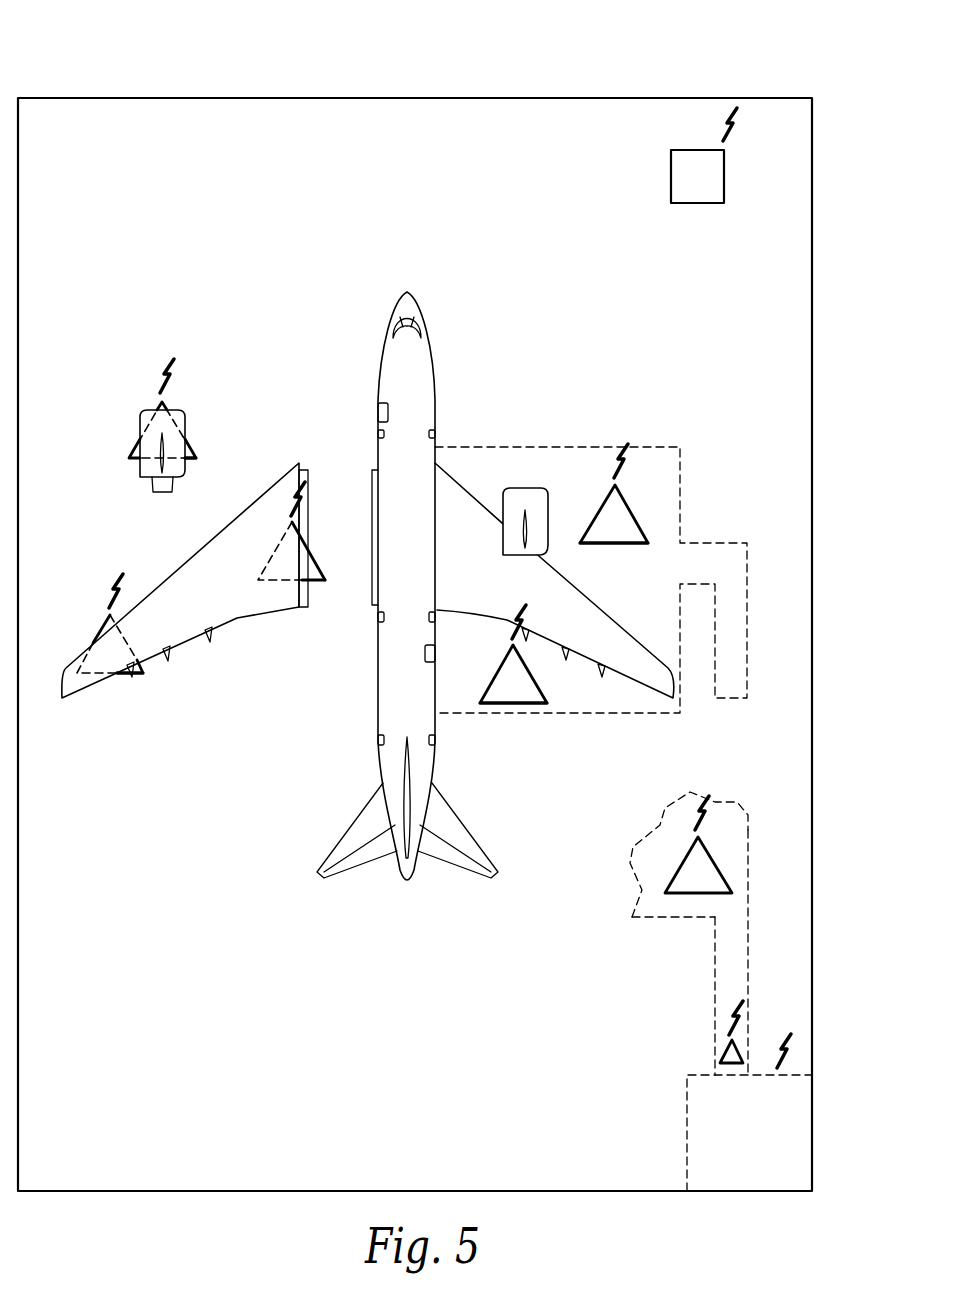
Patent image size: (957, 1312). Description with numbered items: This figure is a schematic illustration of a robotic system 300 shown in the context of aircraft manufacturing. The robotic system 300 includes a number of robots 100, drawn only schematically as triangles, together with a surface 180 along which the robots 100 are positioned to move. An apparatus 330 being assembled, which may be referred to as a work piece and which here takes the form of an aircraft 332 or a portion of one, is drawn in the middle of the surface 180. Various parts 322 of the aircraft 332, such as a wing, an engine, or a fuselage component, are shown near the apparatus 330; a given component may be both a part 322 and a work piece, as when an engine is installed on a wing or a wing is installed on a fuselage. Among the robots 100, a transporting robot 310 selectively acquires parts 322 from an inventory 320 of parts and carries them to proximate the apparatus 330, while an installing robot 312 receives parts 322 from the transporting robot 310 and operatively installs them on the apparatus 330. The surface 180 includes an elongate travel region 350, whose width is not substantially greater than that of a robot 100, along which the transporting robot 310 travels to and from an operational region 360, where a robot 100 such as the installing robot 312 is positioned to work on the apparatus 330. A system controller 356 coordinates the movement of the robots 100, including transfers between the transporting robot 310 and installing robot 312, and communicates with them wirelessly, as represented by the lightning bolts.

The robotic system 300 is at (125, 44).
The robot 100 is at (130, 446).
The surface 180 is at (613, 388).
The transporting robot 310 is at (708, 895).
The installing robot 312 is at (193, 445).
The inventory 320 is at (685, 1140).
The part 322 is at (187, 418).
The apparatus 330 is at (377, 390).
The aircraft 332 is at (405, 288).
The travel region 350 is at (713, 985).
The system controller 356 is at (670, 188).
The operational region 360 is at (485, 447).